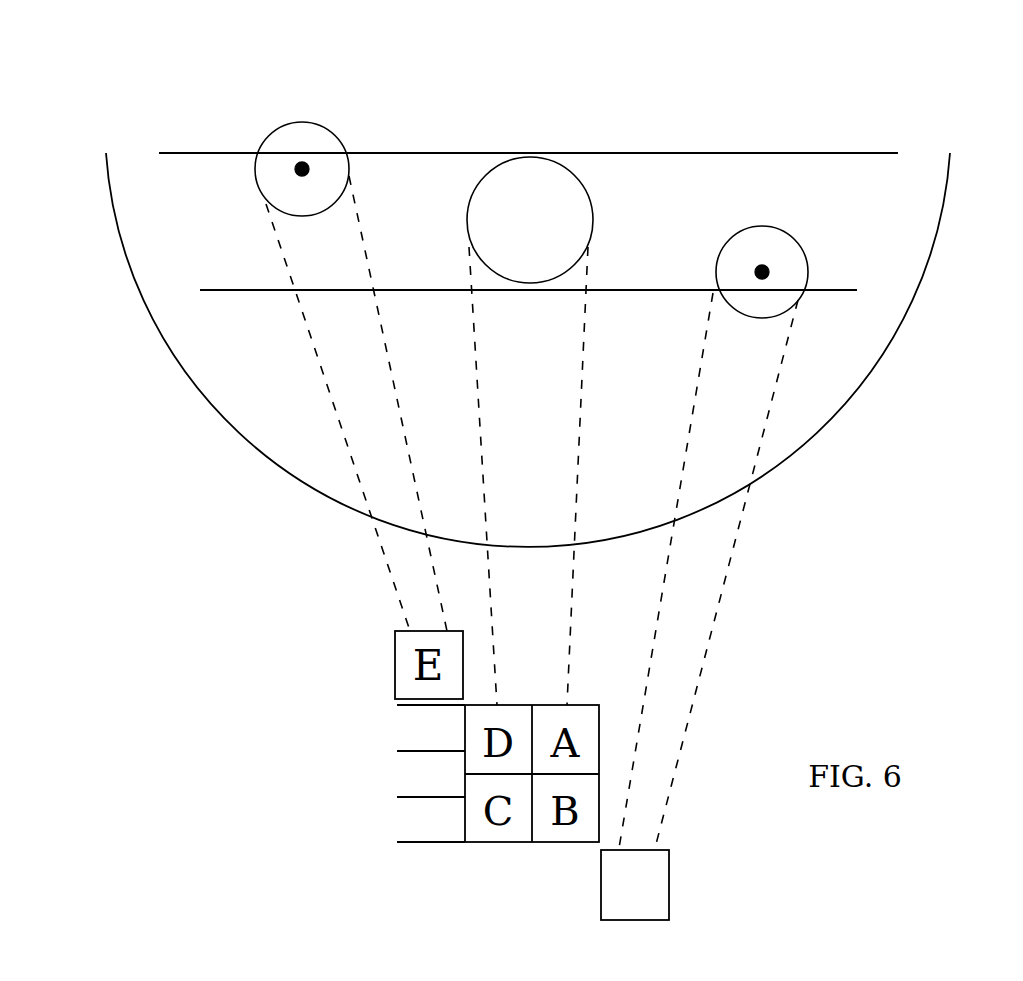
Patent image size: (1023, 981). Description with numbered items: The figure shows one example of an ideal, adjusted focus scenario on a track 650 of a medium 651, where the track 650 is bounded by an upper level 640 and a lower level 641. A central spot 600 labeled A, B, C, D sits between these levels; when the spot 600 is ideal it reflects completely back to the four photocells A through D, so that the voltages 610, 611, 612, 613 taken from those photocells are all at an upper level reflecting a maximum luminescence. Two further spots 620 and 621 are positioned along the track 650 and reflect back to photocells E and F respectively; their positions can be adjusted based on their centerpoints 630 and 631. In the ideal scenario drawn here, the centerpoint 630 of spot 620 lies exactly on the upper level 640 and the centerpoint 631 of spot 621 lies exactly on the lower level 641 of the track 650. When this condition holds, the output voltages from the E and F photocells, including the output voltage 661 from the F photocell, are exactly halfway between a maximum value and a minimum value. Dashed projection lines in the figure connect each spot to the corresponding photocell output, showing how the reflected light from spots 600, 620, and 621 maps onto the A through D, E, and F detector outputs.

The spot 600 is at (530, 157).
The voltage 610 is at (397, 705).
The voltage 611 is at (397, 751).
The voltage 612 is at (397, 797).
The voltage 613 is at (397, 842).
The spot 620 is at (301, 102).
The spot 621 is at (758, 203).
The centerpoint 630 is at (304, 163).
The centerpoint 631 is at (765, 267).
The upper level 640 is at (845, 152).
The lower level 641 is at (843, 291).
The track 650 is at (190, 208).
The medium 651 is at (288, 433).
The output voltage 661 is at (601, 883).